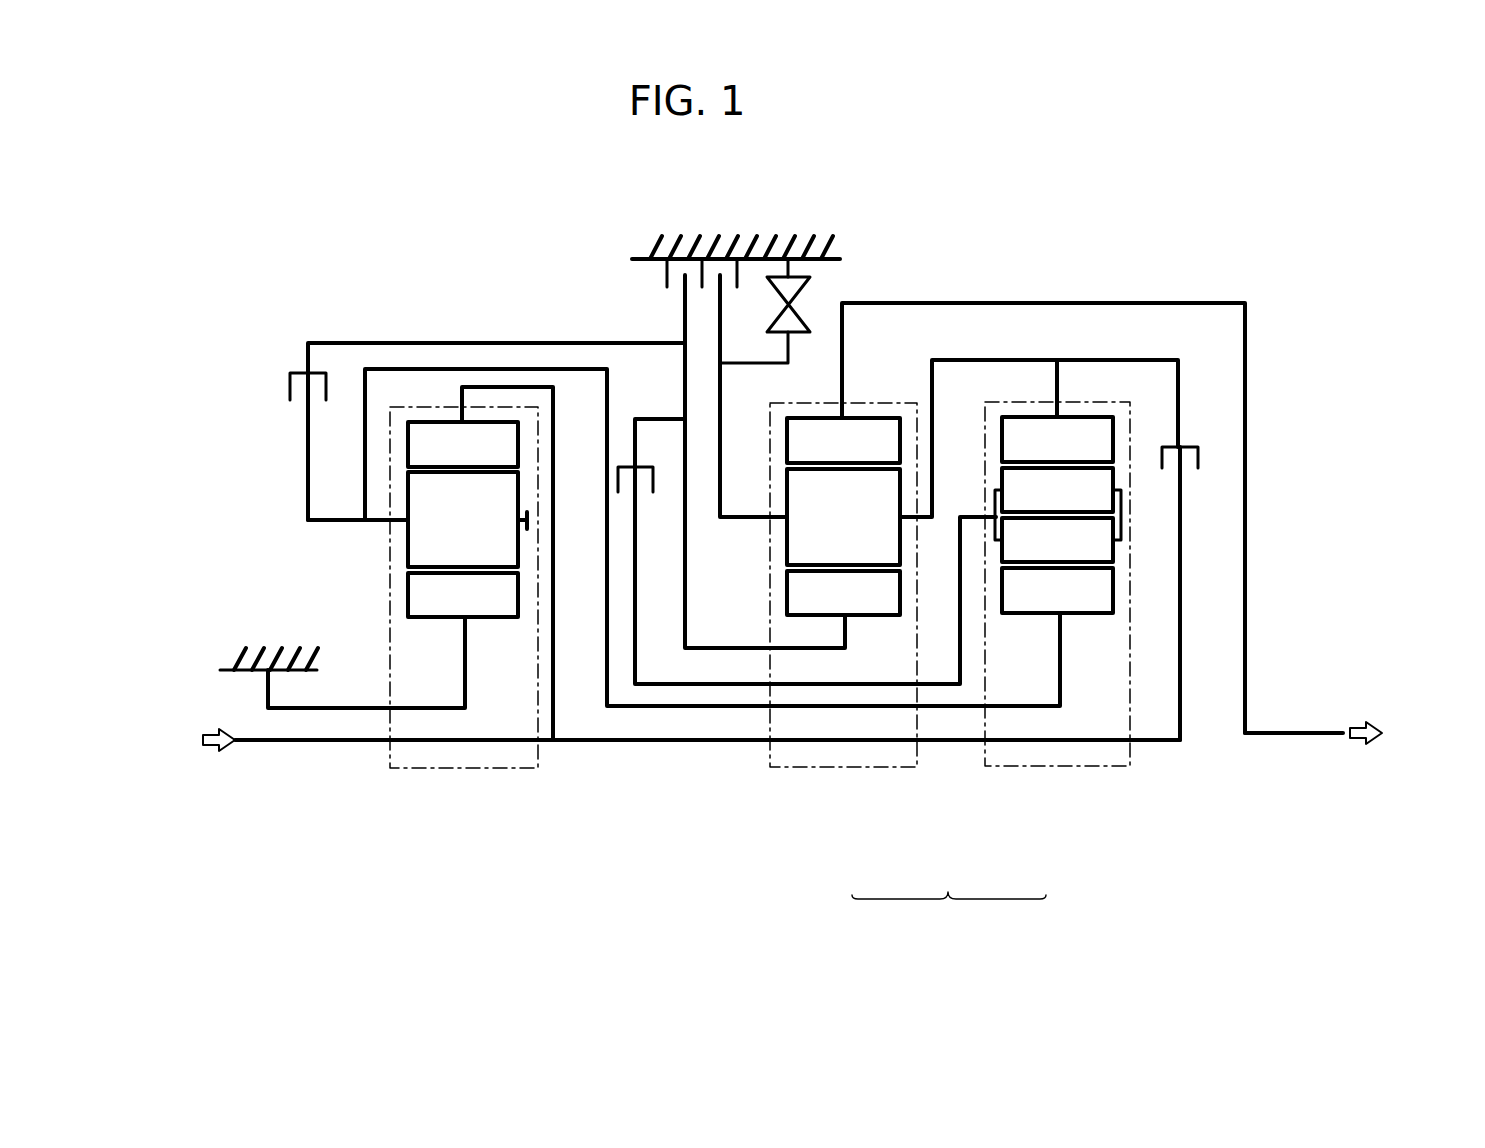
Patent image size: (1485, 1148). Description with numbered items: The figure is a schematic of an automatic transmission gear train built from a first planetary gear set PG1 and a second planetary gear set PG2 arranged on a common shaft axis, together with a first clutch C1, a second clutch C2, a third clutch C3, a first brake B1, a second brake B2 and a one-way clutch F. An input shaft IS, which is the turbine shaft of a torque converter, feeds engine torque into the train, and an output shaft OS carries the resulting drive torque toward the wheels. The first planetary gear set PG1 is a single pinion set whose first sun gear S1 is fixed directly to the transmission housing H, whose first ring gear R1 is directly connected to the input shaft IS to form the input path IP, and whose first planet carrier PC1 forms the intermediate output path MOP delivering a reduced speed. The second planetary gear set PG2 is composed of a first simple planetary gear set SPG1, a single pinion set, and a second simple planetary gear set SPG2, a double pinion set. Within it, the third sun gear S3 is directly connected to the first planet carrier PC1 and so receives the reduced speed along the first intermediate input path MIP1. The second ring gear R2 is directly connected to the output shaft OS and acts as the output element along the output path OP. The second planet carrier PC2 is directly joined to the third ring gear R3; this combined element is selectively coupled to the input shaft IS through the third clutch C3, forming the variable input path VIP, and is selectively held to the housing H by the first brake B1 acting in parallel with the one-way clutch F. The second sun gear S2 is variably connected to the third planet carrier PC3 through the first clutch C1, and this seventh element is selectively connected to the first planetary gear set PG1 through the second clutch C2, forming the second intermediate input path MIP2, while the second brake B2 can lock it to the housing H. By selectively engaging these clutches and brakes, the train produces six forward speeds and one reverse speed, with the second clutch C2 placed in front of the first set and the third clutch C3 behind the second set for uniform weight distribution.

The transmission housing H is at (705, 242).
The input shaft IS is at (268, 745).
The output shaft OS is at (1300, 738).
The input path IP is at (548, 758).
The output path OP is at (1228, 278).
The first intermediate input path MIP1 is at (580, 606).
The second intermediate input path MIP2 is at (699, 386).
The intermediate output path MOP is at (322, 545).
The variable input path VIP is at (1198, 698).
The first planetary gear set PG1 is at (467, 786).
The second planetary gear set PG2 is at (949, 913).
The first simple planetary gear set SPG1 is at (852, 782).
The second simple planetary gear set SPG2 is at (1050, 782).
The first ring gear R1 is at (463, 444).
The first sun gear S1 is at (393, 640).
The first planet carrier PC1 is at (382, 524).
The second ring gear R2 is at (843, 440).
The second sun gear S2 is at (843, 593).
The second planet carrier PC2 is at (755, 520).
The third ring gear R3 is at (1057, 411).
The third sun gear S3 is at (1057, 590).
The third planet carrier PC3 is at (970, 511).
The first clutch C1 is at (807, 551).
The second clutch C2 is at (471, 431).
The third clutch C3 is at (1196, 593).
The first brake B1 is at (753, 388).
The second brake B2 is at (670, 280).
The one-way clutch F is at (772, 311).